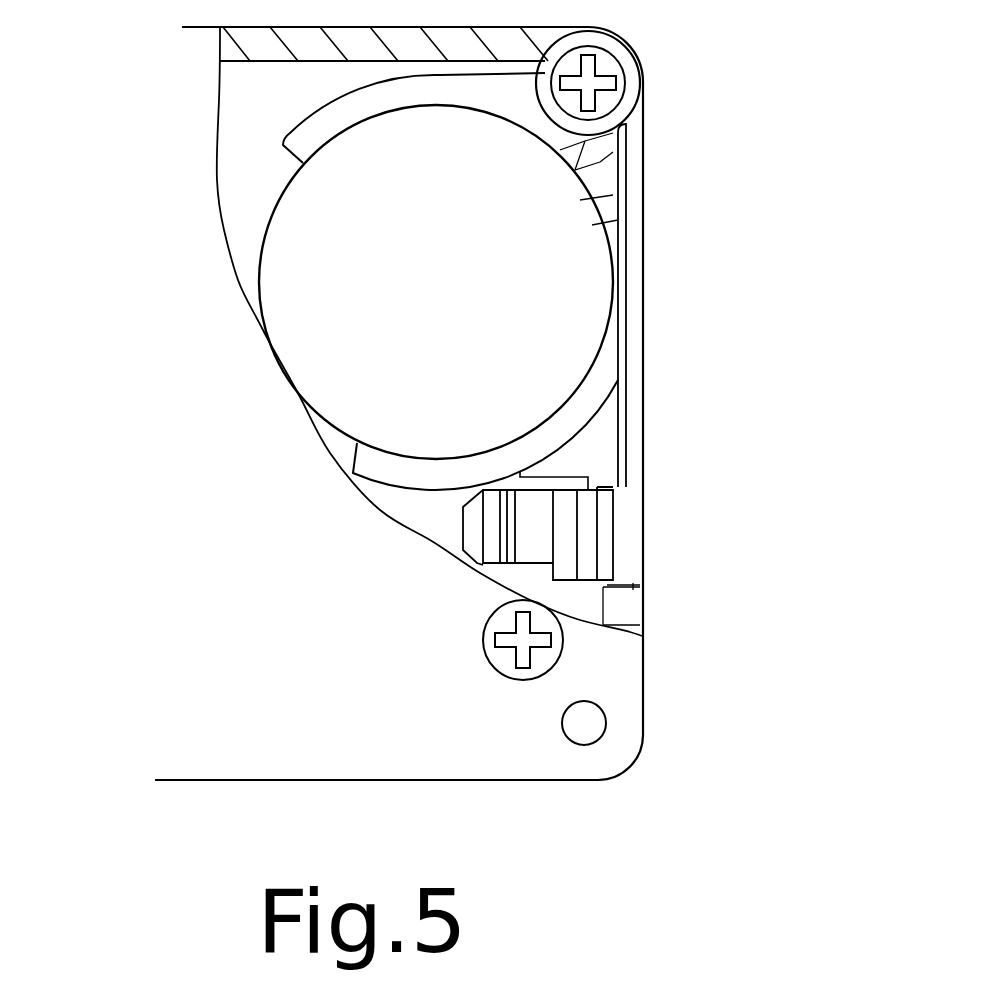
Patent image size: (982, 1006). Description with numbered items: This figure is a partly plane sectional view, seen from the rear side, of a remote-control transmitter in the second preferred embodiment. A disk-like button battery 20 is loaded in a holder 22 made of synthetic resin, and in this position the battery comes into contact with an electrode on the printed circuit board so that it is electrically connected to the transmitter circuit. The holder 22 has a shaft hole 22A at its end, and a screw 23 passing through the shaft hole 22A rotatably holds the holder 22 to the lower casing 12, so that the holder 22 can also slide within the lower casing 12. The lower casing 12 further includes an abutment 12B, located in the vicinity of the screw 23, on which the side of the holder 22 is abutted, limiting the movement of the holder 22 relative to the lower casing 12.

The lower casing 12 is at (297, 720).
The abutment 12B is at (535, 62).
The disk-like button battery 20 is at (565, 268).
The holder 22 is at (633, 445).
The shaft hole 22A is at (643, 75).
The screw 23 is at (612, 100).